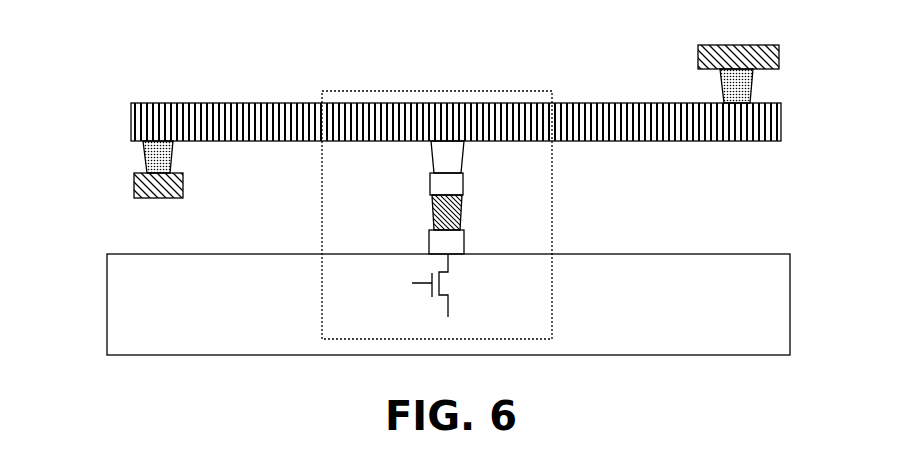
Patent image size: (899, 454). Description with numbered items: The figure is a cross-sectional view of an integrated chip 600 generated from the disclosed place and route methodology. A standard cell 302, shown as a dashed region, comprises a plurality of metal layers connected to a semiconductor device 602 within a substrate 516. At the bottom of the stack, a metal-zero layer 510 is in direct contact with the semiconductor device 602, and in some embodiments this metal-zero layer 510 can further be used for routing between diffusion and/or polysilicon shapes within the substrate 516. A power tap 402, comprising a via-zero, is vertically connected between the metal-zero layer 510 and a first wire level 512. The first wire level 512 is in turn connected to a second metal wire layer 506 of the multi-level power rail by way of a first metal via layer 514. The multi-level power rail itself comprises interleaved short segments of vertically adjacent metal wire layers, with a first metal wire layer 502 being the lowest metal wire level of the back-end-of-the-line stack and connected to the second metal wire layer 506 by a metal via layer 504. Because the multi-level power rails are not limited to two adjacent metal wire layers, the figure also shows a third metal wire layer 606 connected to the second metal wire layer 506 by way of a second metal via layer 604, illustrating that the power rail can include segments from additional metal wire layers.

The integrated chip 600 is at (96, 42).
The standard cell 302 is at (319, 83).
The power tap 402 is at (423, 211).
The first metal wire layer 502 is at (128, 181).
The metal via layer 504 is at (134, 155).
The second metal wire layer 506 is at (606, 96).
The metal 0 layer 510 is at (420, 239).
The first wire level 512 is at (421, 181).
The first metal via layer 514 is at (421, 157).
The substrate 516 is at (790, 302).
The semiconductor device 602 is at (470, 279).
The second metal via layer 604 is at (762, 85).
The third metal wire layer 606 is at (789, 52).